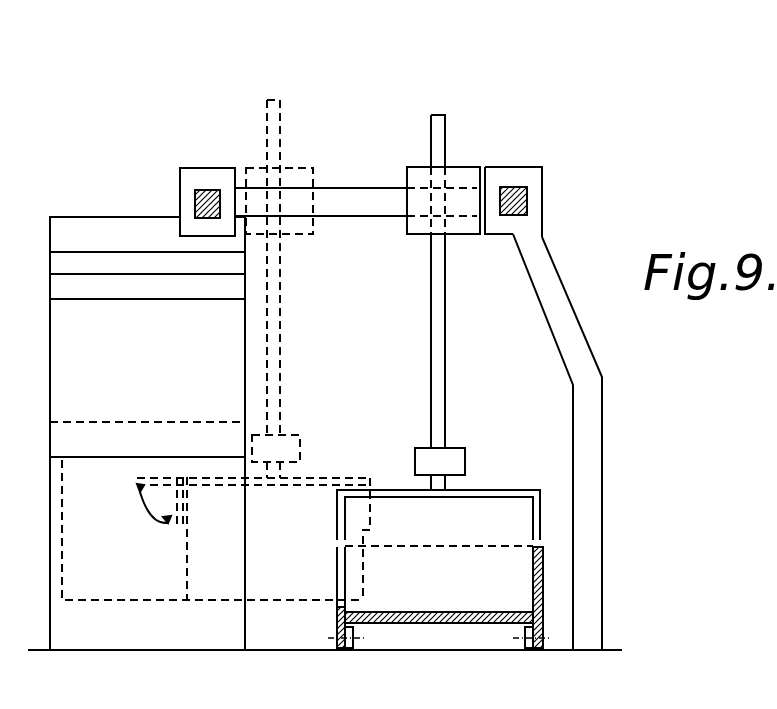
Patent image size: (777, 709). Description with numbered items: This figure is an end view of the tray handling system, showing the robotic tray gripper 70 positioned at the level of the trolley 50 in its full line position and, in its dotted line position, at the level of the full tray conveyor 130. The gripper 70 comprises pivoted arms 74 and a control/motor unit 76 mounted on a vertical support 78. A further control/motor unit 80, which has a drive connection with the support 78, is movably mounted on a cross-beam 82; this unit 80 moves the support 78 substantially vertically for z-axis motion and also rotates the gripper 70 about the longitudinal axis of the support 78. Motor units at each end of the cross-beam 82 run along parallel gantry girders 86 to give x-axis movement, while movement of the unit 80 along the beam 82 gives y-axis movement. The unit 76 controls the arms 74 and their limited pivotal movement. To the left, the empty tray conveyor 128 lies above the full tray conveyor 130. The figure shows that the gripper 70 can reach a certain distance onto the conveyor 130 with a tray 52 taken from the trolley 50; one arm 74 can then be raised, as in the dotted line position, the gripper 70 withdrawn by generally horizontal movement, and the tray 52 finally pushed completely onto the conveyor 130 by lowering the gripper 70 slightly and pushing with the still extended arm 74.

The trolley 50 is at (543, 588).
The tray 52 is at (436, 580).
The robotic tray gripper 70 is at (382, 478).
The pivoted arms 74 is at (148, 475).
The control/motor unit 76 is at (465, 448).
The vertical support 78 is at (432, 263).
The further control/motor unit 80 is at (465, 175).
The cross-beam 82 is at (345, 192).
The gantry girders 86 is at (205, 187).
The conveyor 128 is at (125, 418).
The conveyor 130 is at (167, 603).